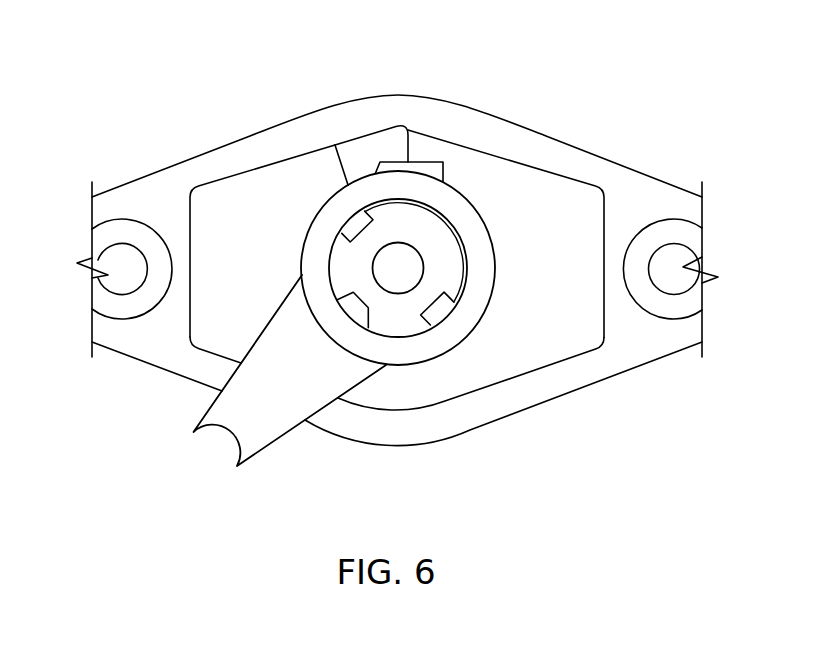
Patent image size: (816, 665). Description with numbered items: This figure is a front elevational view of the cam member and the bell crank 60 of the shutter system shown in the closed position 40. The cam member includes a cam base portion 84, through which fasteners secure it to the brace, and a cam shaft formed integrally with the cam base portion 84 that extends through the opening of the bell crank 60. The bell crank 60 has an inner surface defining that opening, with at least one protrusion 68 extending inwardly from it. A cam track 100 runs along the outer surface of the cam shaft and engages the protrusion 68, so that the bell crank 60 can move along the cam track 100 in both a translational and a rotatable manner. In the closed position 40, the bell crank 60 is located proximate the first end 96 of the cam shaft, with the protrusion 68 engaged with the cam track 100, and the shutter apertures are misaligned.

The closed position 40 is at (330, 58).
The cam base portion 84 is at (251, 228).
The protrusion 68 is at (355, 222).
The bell crank 60 is at (226, 427).
The first end 96 is at (402, 312).
The cam track 100 is at (428, 327).